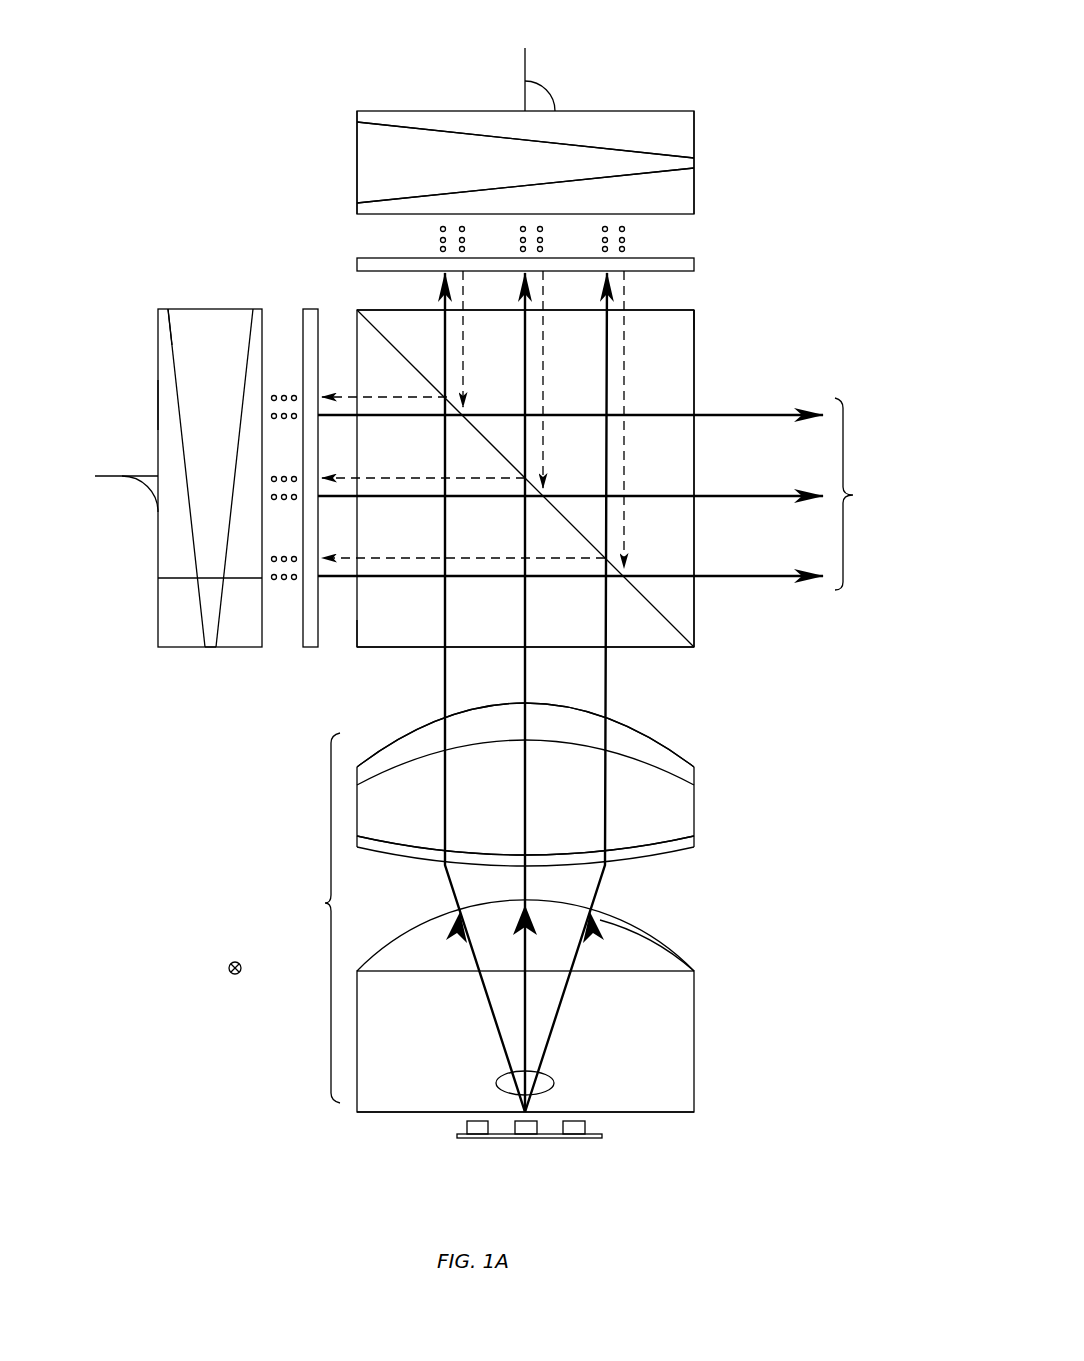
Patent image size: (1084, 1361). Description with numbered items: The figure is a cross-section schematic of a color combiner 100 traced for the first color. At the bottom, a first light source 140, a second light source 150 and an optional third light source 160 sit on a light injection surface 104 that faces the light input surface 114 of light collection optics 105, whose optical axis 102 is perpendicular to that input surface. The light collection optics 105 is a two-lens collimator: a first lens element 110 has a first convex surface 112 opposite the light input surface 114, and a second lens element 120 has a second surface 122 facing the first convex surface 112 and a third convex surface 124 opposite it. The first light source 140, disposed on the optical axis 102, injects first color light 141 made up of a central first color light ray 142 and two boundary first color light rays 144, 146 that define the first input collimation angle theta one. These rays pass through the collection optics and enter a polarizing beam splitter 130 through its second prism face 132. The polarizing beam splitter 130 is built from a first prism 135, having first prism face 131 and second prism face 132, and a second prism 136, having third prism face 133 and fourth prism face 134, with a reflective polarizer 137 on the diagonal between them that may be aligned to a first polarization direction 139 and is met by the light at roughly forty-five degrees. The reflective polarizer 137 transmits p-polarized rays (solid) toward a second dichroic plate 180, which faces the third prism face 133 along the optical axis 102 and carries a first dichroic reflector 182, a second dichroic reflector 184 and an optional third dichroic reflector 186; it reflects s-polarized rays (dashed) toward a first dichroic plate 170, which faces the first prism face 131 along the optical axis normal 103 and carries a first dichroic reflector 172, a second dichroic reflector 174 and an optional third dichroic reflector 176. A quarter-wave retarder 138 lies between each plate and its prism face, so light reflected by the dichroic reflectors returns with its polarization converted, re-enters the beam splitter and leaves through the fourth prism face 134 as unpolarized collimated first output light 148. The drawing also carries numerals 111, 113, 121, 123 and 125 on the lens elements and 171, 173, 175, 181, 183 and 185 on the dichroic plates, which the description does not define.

The color combiner 100 is at (210, 117).
The optical axis 102 is at (525, 68).
The optical axis normal 103 is at (113, 476).
The light injection surface 104 is at (602, 1136).
The light collection optics 105 is at (311, 918).
The first lens element 110 is at (556, 1027).
The light source housing 111 is at (678, 1086).
The first convex surface 112 is at (672, 945).
The lens surface 113 is at (672, 960).
The light input surface 114 is at (383, 1115).
The second lens element 120 is at (600, 792).
The lens surface 121 is at (692, 843).
The second surface 122 is at (678, 852).
The upper lens 123 is at (672, 762).
The third convex surface 124 is at (660, 748).
The lens side surface 125 is at (678, 792).
The polarizing beam splitter 130 is at (548, 492).
The first prism face 131 is at (357, 632).
The second prism face 132 is at (381, 649).
The third prism face 133 is at (694, 308).
The fourth prism face 134 is at (695, 353).
The first prism 135 is at (370, 648).
The second prism 136 is at (688, 317).
The reflective polarizer 137 is at (693, 620).
The retarder 138 is at (355, 267).
The first polarization direction 139 is at (238, 977).
The first light source 140 is at (525, 1139).
The first color light 141 is at (555, 1090).
The central first color light ray 142 is at (527, 997).
The boundary first color light ray 144 is at (555, 1040).
The boundary first color light ray 146 is at (495, 1040).
The first output light 148 is at (607, 494).
The second light source 150 is at (573, 1139).
The third light source 160 is at (477, 1139).
The first dichroic plate 170 is at (178, 492).
The waveguide housing 171 is at (248, 640).
The first dichroic reflector 172 is at (262, 578).
The tapered waveguide core 173 is at (202, 325).
The second dichroic reflector 174 is at (216, 627).
The waveguide side surface 175 is at (170, 415).
The third dichroic reflector 176 is at (170, 340).
The second dichroic plate 180 is at (567, 141).
The waveguide housing 181 is at (690, 201).
The first dichroic reflector 182 is at (684, 199).
The waveguide body 183 is at (367, 150).
The second dichroic reflector 184 is at (664, 160).
The waveguide input end 185 is at (373, 117).
The third dichroic reflector 186 is at (645, 150).